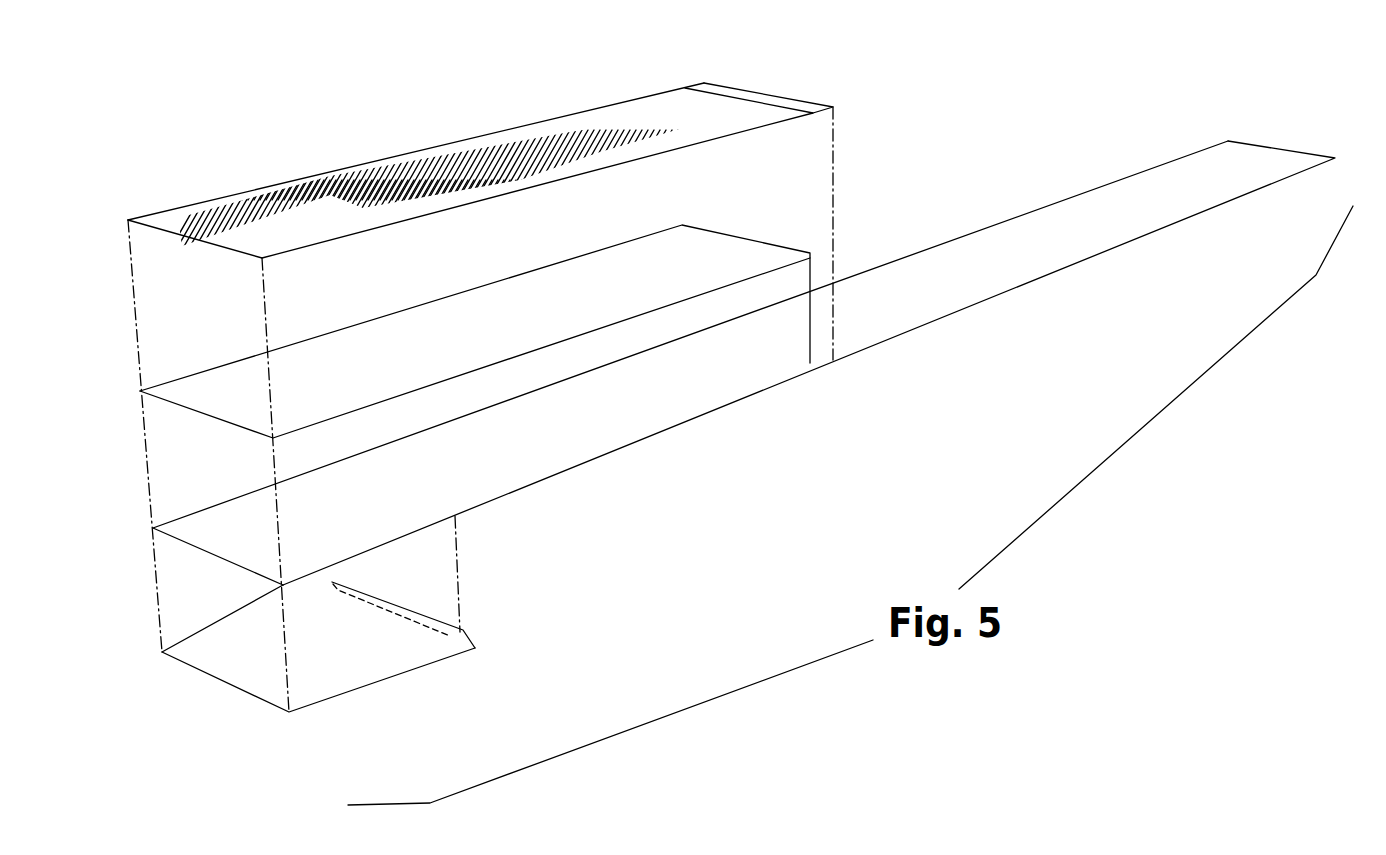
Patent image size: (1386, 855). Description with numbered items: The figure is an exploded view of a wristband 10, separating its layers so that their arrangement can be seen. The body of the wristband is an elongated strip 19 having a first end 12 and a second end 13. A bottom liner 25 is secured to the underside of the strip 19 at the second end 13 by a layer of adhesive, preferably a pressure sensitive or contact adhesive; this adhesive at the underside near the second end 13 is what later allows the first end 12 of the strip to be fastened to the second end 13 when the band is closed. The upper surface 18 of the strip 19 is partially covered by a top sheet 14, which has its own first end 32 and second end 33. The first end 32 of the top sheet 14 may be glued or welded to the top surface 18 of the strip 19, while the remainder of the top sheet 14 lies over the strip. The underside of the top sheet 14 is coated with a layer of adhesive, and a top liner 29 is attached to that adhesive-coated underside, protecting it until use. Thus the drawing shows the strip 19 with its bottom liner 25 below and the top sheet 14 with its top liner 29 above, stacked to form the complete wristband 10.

The wristband 10 is at (1000, 74).
The first end 12 is at (1271, 148).
The second end 13 is at (227, 538).
The top sheet 14 is at (598, 105).
The upper surface 18 is at (680, 404).
The strip 19 is at (978, 220).
The bottom liner 25 is at (375, 673).
The top liner 29 is at (450, 295).
The first end 32 is at (768, 96).
The second end 33 is at (182, 237).